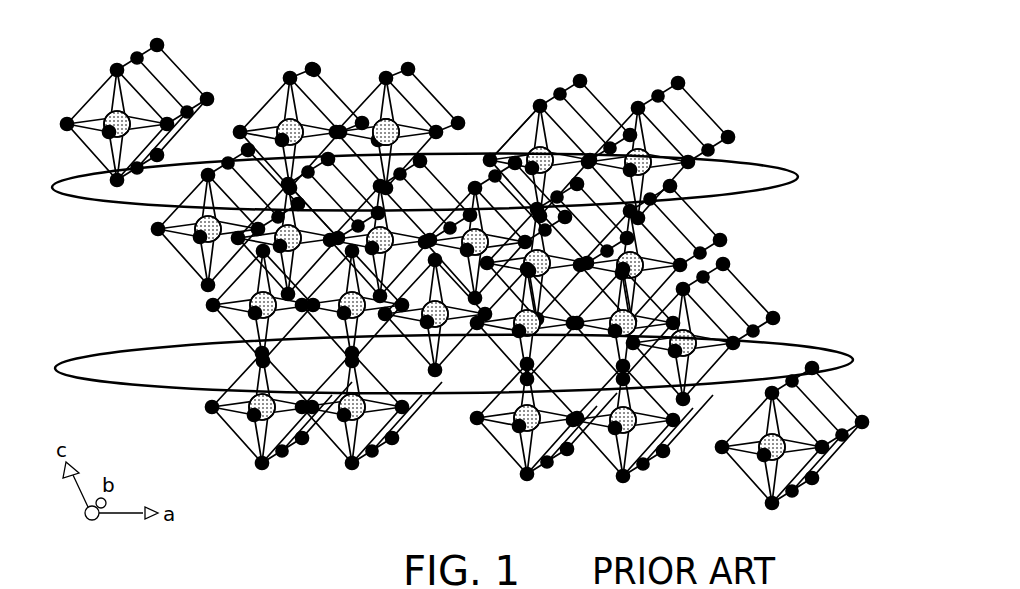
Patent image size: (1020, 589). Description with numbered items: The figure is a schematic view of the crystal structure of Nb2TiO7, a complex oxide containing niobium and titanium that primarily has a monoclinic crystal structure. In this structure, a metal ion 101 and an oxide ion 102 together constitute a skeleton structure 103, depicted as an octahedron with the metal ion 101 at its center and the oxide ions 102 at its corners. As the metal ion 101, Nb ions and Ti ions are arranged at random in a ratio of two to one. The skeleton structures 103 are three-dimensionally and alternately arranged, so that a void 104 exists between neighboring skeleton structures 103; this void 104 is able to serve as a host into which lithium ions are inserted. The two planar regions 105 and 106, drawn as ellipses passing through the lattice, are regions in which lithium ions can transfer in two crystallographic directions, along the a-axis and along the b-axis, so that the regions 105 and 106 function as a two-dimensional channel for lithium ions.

The metal ion 101 is at (396, 122).
The oxide ion 102 is at (315, 64).
The skeleton structure 103 is at (515, 128).
The void 104 is at (342, 181).
The region 105 is at (773, 167).
The region 106 is at (815, 348).